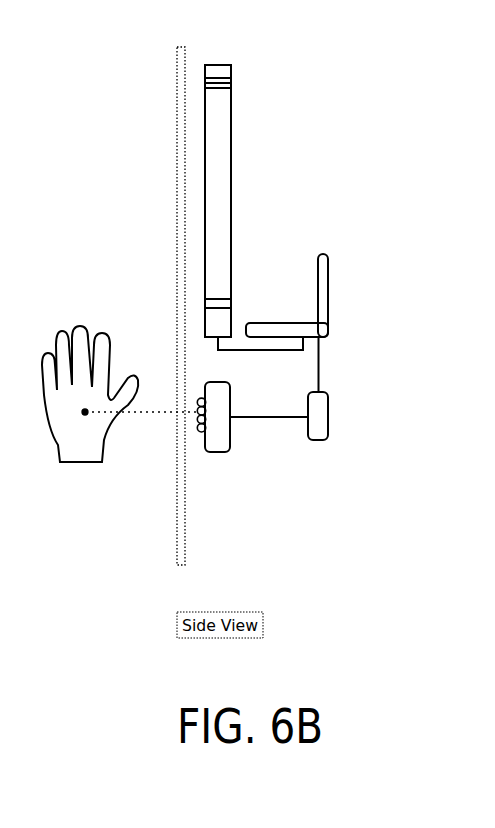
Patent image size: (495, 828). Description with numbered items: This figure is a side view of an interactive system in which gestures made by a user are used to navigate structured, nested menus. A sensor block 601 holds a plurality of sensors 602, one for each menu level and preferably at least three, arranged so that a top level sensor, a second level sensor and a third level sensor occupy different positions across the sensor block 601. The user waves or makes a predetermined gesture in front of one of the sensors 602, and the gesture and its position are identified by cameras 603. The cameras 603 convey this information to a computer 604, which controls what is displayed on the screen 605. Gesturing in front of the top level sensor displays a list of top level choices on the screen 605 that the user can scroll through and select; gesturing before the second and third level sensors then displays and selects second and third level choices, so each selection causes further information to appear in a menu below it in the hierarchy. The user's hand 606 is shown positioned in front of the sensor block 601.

The sensor block 601 is at (218, 430).
The sensors 602 is at (199, 430).
The cameras 603 is at (318, 432).
The computer 604 is at (328, 272).
The screen 605 is at (231, 90).
The user's hand 606 is at (177, 460).